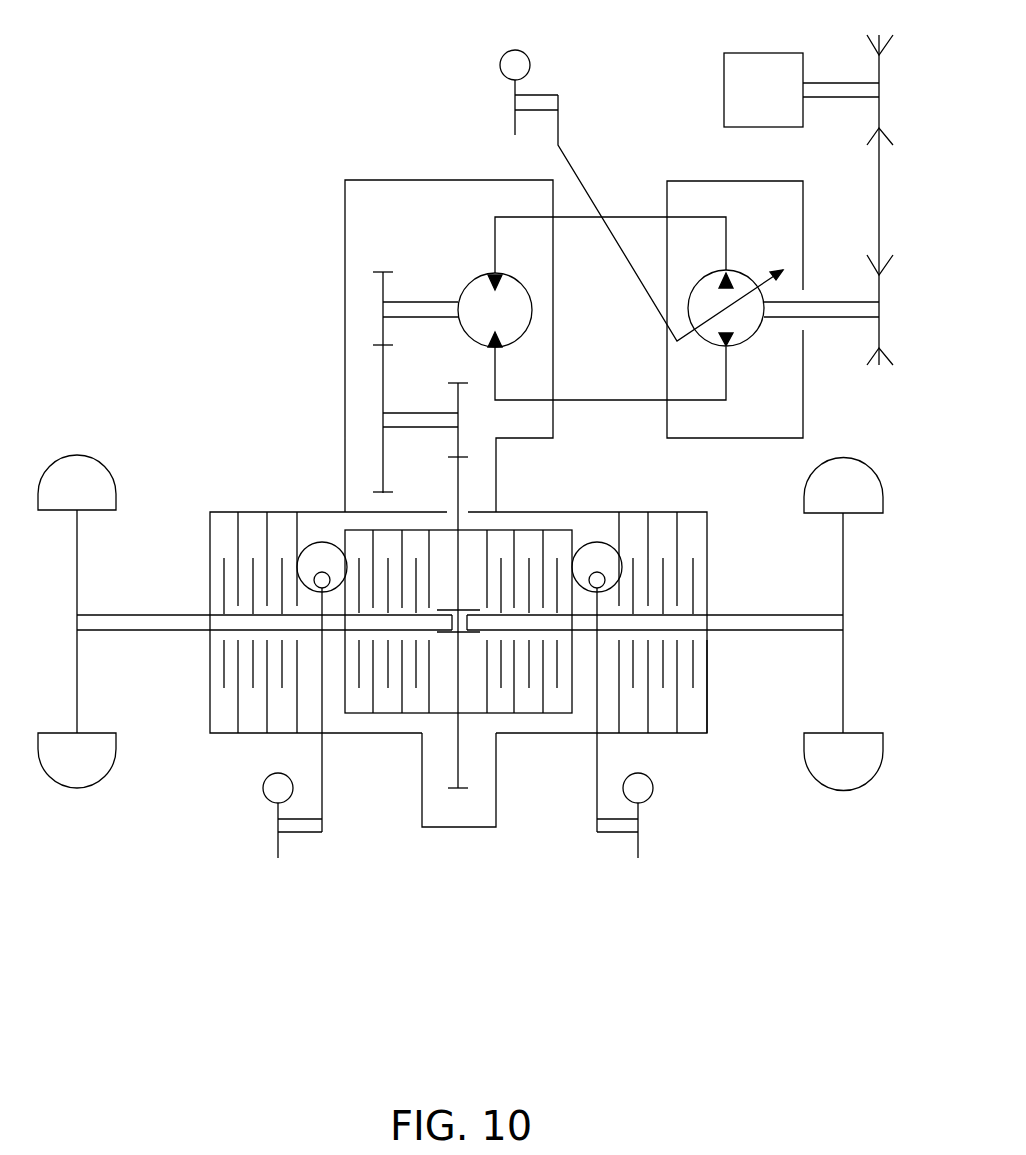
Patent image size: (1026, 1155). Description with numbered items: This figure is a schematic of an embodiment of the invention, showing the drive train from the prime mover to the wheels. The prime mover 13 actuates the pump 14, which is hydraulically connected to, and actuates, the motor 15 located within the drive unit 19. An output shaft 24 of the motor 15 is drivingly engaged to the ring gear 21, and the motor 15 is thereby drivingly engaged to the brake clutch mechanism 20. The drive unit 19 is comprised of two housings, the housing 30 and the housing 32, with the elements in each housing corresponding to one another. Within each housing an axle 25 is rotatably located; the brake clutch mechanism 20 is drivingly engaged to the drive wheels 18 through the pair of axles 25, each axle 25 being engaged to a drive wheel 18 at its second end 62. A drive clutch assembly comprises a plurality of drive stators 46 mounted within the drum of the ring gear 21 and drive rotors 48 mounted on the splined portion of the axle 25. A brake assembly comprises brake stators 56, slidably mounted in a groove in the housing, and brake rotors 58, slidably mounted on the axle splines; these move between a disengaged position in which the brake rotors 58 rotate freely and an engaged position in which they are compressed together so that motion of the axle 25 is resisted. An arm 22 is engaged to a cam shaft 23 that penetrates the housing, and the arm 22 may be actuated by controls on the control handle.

The prime mover 13 is at (763, 53).
The pump 14 is at (735, 438).
The motor 15 is at (473, 278).
The drive wheels 18 is at (72, 453).
The drive unit 19 is at (385, 346).
The brake clutch mechanism 20 is at (308, 511).
The ring gear 21 is at (460, 467).
The arm 22 is at (278, 848).
The cam shaft 23 is at (590, 518).
The output shaft 24 is at (413, 278).
The axle 25 is at (752, 614).
The housing 30 is at (498, 808).
The housing 32 is at (422, 808).
The drive stators 46 is at (583, 698).
The drive rotors 48 is at (556, 672).
The brake stators 56 is at (708, 715).
The brake rotors 58 is at (693, 670).
The second end 62 is at (833, 625).